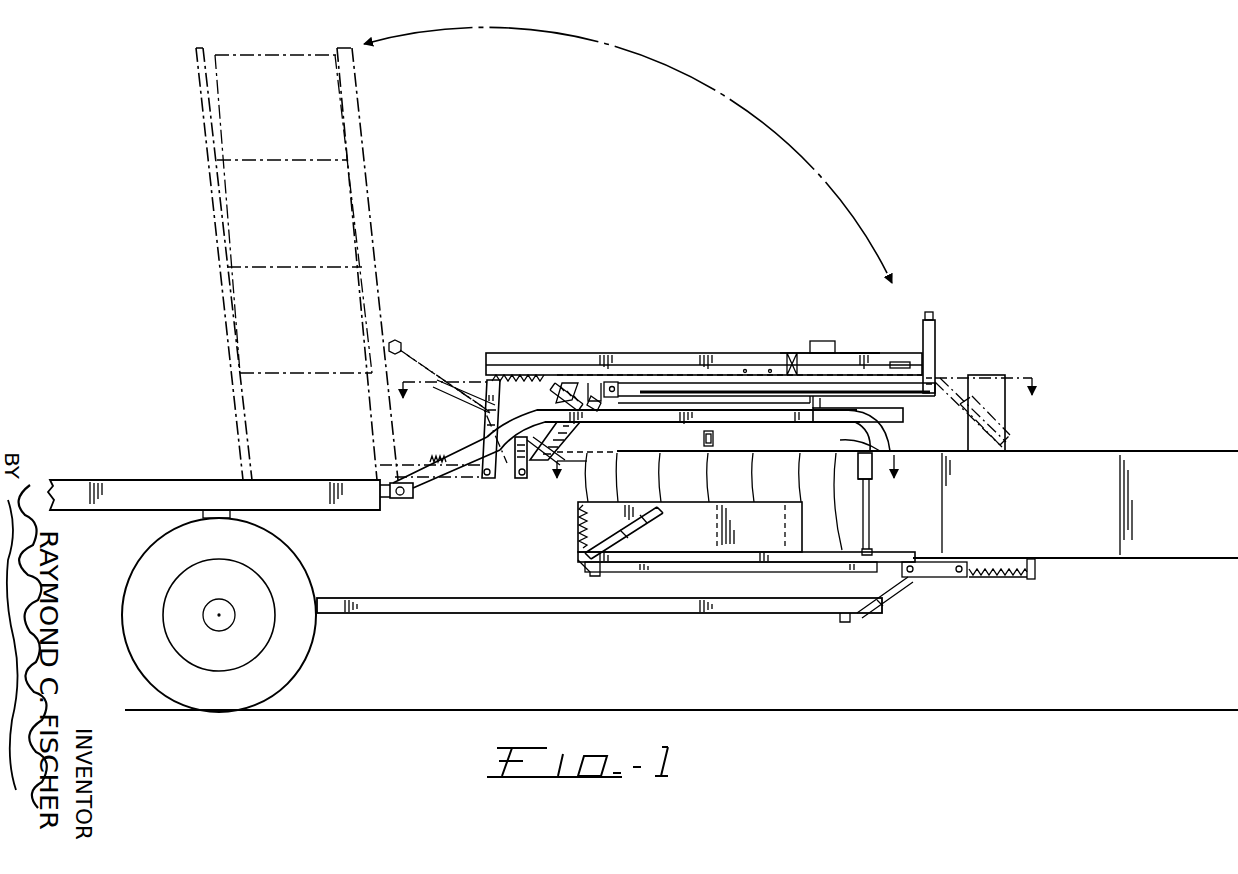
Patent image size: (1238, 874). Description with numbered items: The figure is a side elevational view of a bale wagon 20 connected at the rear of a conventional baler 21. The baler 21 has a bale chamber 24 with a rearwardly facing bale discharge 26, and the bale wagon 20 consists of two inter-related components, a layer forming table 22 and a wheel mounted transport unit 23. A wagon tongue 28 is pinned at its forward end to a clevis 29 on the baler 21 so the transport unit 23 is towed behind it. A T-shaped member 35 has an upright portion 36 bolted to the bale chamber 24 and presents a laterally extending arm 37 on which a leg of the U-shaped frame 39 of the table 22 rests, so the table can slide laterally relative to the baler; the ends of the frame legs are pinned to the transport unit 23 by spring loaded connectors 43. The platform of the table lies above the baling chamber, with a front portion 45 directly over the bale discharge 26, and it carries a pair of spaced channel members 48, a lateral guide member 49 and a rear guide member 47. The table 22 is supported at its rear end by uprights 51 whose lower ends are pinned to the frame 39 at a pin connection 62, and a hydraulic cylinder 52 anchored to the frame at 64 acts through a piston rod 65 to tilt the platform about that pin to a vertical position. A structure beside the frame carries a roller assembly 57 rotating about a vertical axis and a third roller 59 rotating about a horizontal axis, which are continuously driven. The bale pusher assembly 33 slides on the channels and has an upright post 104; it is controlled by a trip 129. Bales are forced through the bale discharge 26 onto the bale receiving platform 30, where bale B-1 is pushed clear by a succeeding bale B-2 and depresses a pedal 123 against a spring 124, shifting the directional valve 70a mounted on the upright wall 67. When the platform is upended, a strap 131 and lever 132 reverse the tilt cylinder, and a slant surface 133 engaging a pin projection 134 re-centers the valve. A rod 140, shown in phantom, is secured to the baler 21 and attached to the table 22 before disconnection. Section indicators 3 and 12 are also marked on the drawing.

The bale wagon 20 is at (568, 128).
The baler 21 is at (1102, 437).
The layer forming table 22 is at (390, 268).
The transport unit 23 is at (148, 415).
The bale chamber 24 is at (997, 472).
The bale discharge 26 is at (865, 503).
The wagon tongue 28 is at (613, 607).
The clevis 29 is at (866, 615).
The bale receiving platform 30 is at (708, 492).
The bale pusher assembly 33 is at (946, 330).
The T-shaped member 35 is at (781, 430).
The upright portion 36 is at (882, 452).
The arm 37 is at (704, 437).
The frame 39 is at (637, 425).
The spring loaded connector 43 is at (405, 499).
The front portion 45 is at (872, 362).
The rear guide member 47 is at (486, 352).
The channel member 48 is at (616, 388).
The lateral guide member 49 is at (750, 360).
The upright 51 is at (500, 430).
The hydraulic cylinder 52 is at (560, 442).
The roller assembly 57 is at (856, 468).
The third roller 59 is at (905, 362).
The pin connection 62 is at (492, 480).
The cylinder anchor 64 is at (527, 480).
The piston rod 65 is at (592, 383).
The upright wall 67 is at (738, 512).
The directional valve 70a is at (638, 527).
The upright post 104 is at (936, 348).
The pedal 123 is at (578, 552).
The spring 124 is at (583, 520).
The trip 129 is at (823, 341).
The strap 131 is at (487, 388).
The lever 132 is at (543, 375).
The slant surface 133 is at (556, 398).
The pin projection 134 is at (578, 400).
The rod 140 is at (972, 413).
The section line 3- 3 is at (717, 400).
The section line 12- 12 is at (731, 479).
The bale B-1 is at (693, 477).
The succeeding bale B-2 is at (853, 522).